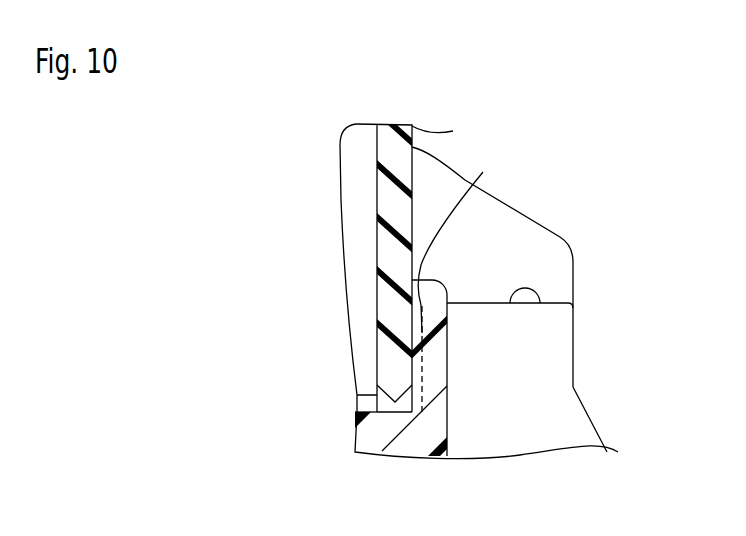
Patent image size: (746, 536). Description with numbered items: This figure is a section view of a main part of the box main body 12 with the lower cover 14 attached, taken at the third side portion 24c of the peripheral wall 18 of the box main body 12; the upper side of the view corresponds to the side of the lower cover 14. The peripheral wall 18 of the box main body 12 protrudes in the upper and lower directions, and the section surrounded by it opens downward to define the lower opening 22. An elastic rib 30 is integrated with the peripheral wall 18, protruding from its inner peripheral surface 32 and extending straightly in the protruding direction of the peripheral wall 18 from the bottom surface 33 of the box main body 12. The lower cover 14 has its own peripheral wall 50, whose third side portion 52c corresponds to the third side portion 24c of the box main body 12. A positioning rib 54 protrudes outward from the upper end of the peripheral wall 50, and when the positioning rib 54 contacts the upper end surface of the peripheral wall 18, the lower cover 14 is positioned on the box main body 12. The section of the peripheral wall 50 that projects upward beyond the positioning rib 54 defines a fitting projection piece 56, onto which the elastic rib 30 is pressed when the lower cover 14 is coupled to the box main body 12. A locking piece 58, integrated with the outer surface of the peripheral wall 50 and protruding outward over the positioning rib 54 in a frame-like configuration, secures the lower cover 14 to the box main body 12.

The box main body 12 is at (467, 434).
The lower cover 14 is at (572, 146).
The peripheral wall 18 is at (545, 375).
The lower opening 22 is at (464, 242).
The third side portion 24c is at (440, 378).
The elastic rib 30 is at (413, 378).
The inner peripheral surface 32 is at (408, 336).
The bottom surface 33 is at (357, 397).
The peripheral wall 50 is at (319, 259).
The third side portion 52c is at (384, 203).
The positioning rib 54 is at (433, 290).
The fitting projection piece 56 is at (388, 308).
The locking piece 58 is at (543, 268).